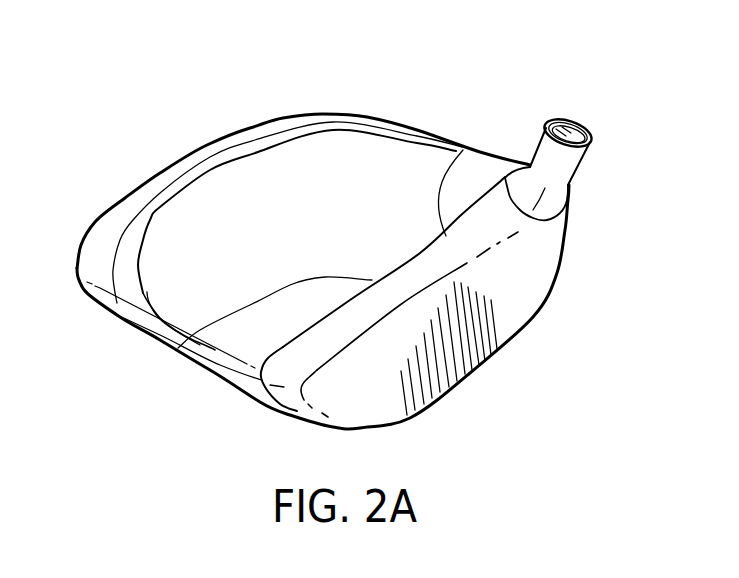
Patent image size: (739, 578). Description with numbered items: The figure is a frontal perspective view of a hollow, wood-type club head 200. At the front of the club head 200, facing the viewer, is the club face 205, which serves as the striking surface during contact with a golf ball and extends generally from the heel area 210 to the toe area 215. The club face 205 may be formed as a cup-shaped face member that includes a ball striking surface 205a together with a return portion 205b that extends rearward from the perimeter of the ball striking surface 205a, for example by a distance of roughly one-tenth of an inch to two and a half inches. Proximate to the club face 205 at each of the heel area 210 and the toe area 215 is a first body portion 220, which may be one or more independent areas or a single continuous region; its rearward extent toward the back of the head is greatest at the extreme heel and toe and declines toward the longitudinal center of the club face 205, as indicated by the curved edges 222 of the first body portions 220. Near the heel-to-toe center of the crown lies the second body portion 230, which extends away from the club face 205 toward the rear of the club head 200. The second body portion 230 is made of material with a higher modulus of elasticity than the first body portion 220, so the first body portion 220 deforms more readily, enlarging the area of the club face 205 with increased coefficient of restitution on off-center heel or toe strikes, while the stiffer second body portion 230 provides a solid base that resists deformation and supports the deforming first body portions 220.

The club head 200 is at (372, 158).
The club face 205 is at (450, 302).
The ball striking surface 205a is at (493, 305).
The return portion 205b is at (412, 268).
The heel area 210 is at (600, 128).
The toe area 215 is at (263, 413).
The first body portion 220 is at (495, 206).
The curved edges 222 is at (449, 162).
The second body portion 230 is at (282, 189).